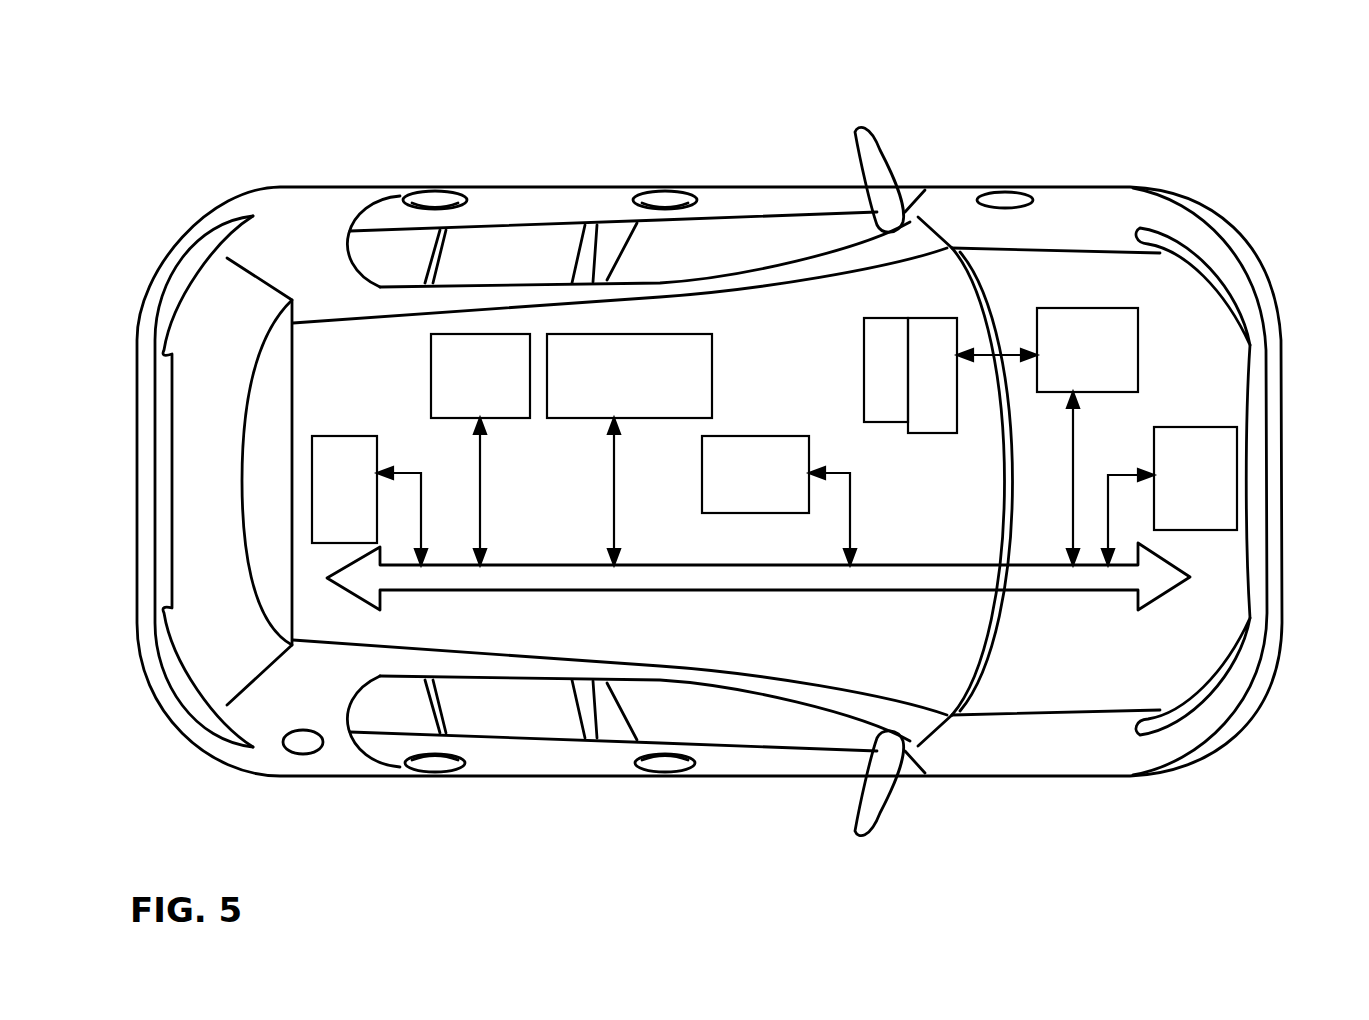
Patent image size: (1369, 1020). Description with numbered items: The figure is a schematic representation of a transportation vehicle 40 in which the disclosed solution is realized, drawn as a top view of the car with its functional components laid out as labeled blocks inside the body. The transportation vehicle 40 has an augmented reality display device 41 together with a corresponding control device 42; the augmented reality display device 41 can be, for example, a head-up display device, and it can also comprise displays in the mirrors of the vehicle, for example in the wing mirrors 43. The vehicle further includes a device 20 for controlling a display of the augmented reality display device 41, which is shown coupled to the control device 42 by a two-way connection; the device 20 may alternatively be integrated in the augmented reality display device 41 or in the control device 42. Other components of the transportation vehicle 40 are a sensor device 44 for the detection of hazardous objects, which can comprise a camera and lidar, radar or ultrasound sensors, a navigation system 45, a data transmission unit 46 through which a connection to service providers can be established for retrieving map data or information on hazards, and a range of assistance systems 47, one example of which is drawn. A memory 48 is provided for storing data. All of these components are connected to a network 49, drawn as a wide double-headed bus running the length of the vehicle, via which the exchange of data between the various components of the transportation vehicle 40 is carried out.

The device for controlling a display of the augmented reality display device 20 is at (1137, 315).
The transportation vehicle 40 is at (1083, 187).
The augmented reality display device 41 is at (888, 318).
The control device 42 is at (940, 318).
The wing mirrors 43 is at (895, 795).
The sensor device 44 is at (764, 431).
The navigation system 45 is at (458, 333).
The data transmission unit 46 is at (590, 333).
The assistance systems 47 is at (1198, 425).
The memory 48 is at (342, 436).
The network 49 is at (518, 588).